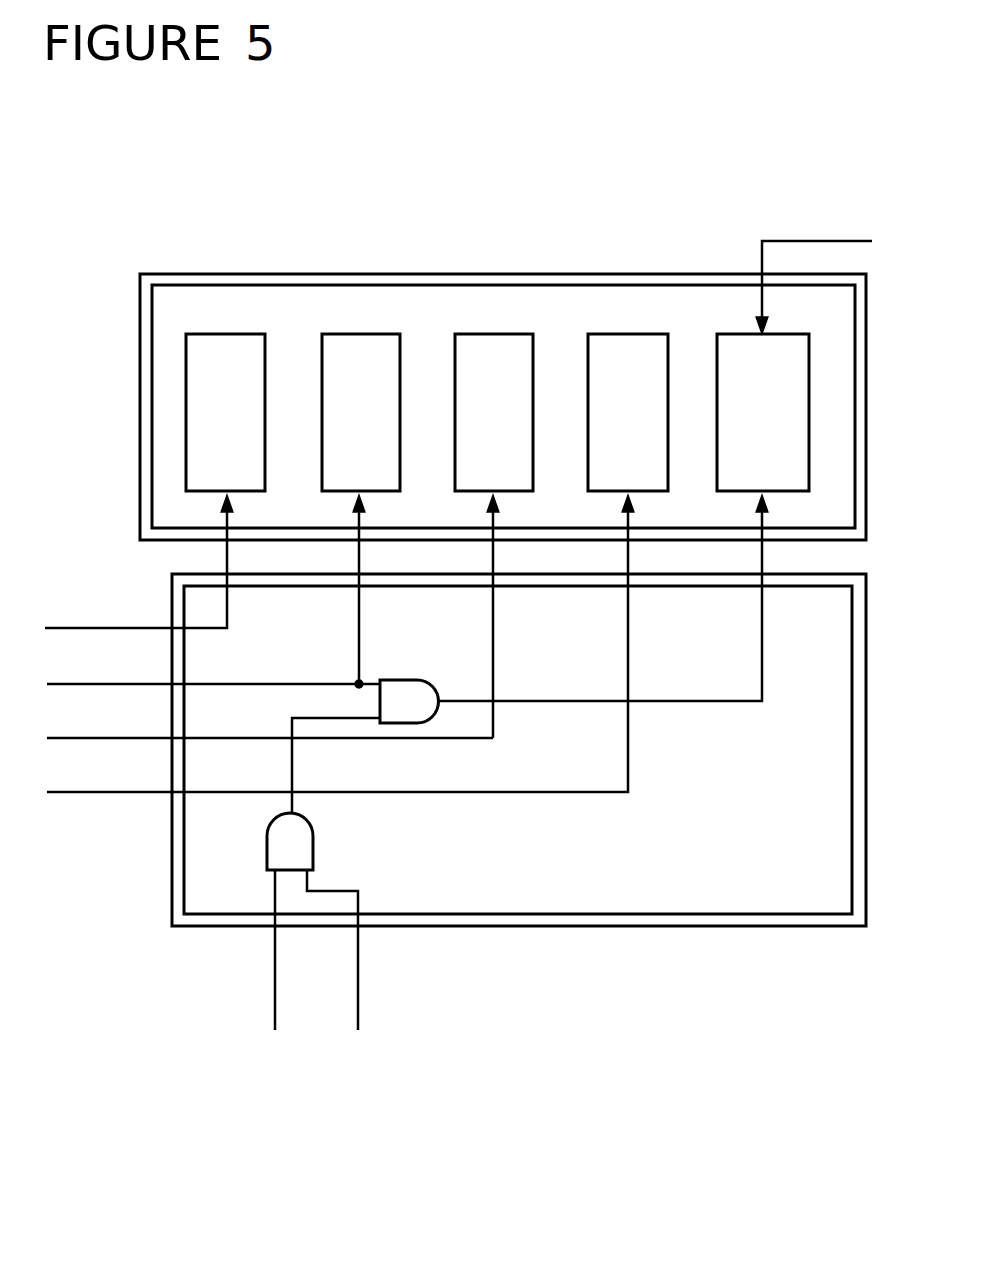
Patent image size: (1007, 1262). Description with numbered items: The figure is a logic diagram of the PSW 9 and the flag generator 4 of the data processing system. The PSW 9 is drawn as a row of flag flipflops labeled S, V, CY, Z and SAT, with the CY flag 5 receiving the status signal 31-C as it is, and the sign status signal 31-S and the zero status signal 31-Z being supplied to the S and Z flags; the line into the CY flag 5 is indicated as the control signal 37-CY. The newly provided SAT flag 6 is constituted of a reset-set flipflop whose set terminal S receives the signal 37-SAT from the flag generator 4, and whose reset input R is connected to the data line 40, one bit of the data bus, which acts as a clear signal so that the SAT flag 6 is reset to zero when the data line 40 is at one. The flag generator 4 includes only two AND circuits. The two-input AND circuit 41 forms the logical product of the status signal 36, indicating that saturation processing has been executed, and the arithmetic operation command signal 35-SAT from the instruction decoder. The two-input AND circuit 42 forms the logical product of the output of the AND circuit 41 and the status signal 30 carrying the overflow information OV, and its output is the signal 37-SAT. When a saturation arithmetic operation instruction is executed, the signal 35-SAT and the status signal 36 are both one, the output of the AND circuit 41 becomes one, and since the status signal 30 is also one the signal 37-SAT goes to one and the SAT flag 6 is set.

The PSW 9 is at (525, 274).
The data line 40 is at (820, 241).
The CY flag 5 is at (535, 468).
The SAT flag 6 is at (811, 468).
The flag generator 4 is at (706, 928).
The status signal 30 is at (115, 684).
The status signal 31-S is at (117, 628).
The status signal 31-C is at (117, 738).
The status signal 31-Z is at (117, 792).
The AND circuit 42 is at (400, 680).
The AND circuit 41 is at (267, 848).
The status signal 36 is at (275, 985).
The arithmetic operation command signal 35-SAT is at (358, 990).
The control signal 37-CY is at (493, 605).
The signal 37-SAT is at (738, 704).